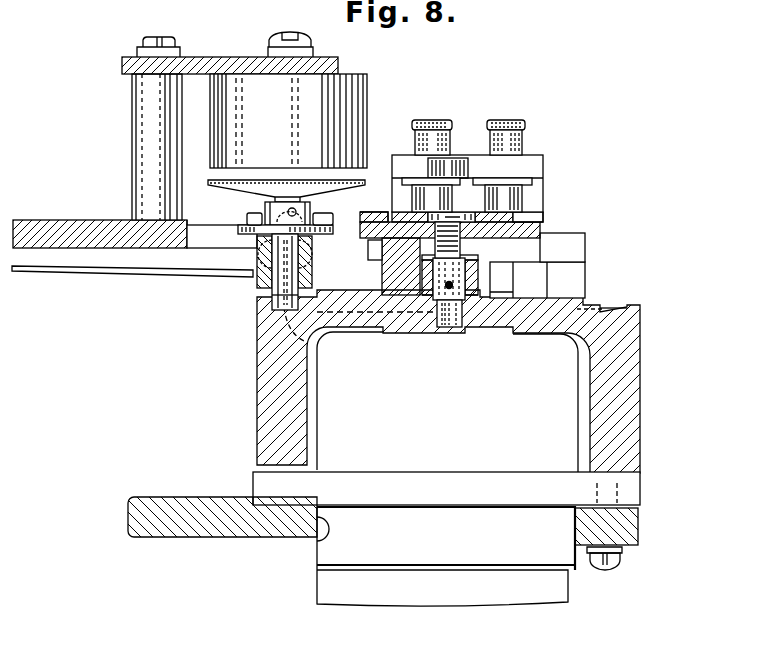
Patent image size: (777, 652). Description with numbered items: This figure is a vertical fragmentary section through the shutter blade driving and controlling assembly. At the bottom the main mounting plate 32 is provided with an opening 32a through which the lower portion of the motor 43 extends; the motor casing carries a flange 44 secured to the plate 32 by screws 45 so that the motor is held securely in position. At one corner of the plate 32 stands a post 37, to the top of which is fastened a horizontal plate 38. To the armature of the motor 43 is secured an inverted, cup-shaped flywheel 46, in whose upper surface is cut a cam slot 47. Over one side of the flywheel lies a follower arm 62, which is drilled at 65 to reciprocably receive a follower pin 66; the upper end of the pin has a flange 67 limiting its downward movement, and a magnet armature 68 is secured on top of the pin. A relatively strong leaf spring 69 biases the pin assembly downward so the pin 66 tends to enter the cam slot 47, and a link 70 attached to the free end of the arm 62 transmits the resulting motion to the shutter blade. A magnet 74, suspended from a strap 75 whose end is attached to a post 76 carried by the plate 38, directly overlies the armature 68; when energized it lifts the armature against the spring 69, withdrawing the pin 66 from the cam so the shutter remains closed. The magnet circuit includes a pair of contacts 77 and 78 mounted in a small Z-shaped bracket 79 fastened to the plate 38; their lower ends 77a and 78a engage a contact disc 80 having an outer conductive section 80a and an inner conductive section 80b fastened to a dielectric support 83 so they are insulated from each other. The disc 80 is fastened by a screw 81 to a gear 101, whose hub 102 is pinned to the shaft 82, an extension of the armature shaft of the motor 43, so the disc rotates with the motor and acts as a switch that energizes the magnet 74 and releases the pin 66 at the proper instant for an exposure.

The main mounting plate 32 is at (182, 520).
The opening 32a is at (320, 540).
The post 37 is at (576, 274).
The horizontal plate 38 is at (55, 225).
The motor 43 is at (538, 553).
The flange 44 is at (630, 493).
The screws 45 is at (624, 556).
The flywheel 46 is at (623, 380).
The cam slot 47 is at (312, 342).
The follower arm 62 is at (262, 280).
The drilled hole 65 is at (262, 252).
The follower pin 66 is at (270, 292).
The flange 67 is at (243, 229).
The magnet armature 68 is at (238, 187).
The leaf spring 69 is at (262, 212).
The link 70 is at (55, 273).
The magnet 74 is at (357, 105).
The strap 75 is at (205, 62).
The post 76 is at (147, 103).
The contact 77 is at (430, 120).
The contact end 77a is at (422, 200).
The contact 78 is at (502, 120).
The contact end 78a is at (520, 200).
The Z-shaped bracket 79 is at (528, 164).
The contact disc 80 is at (560, 230).
The outer conductive section 80a is at (536, 218).
The inner conductive section 80b is at (389, 214).
The screw 81 is at (450, 215).
The shaft 82 is at (459, 295).
The support 83 is at (541, 236).
The gear 101 is at (368, 254).
The hub 102 is at (420, 275).